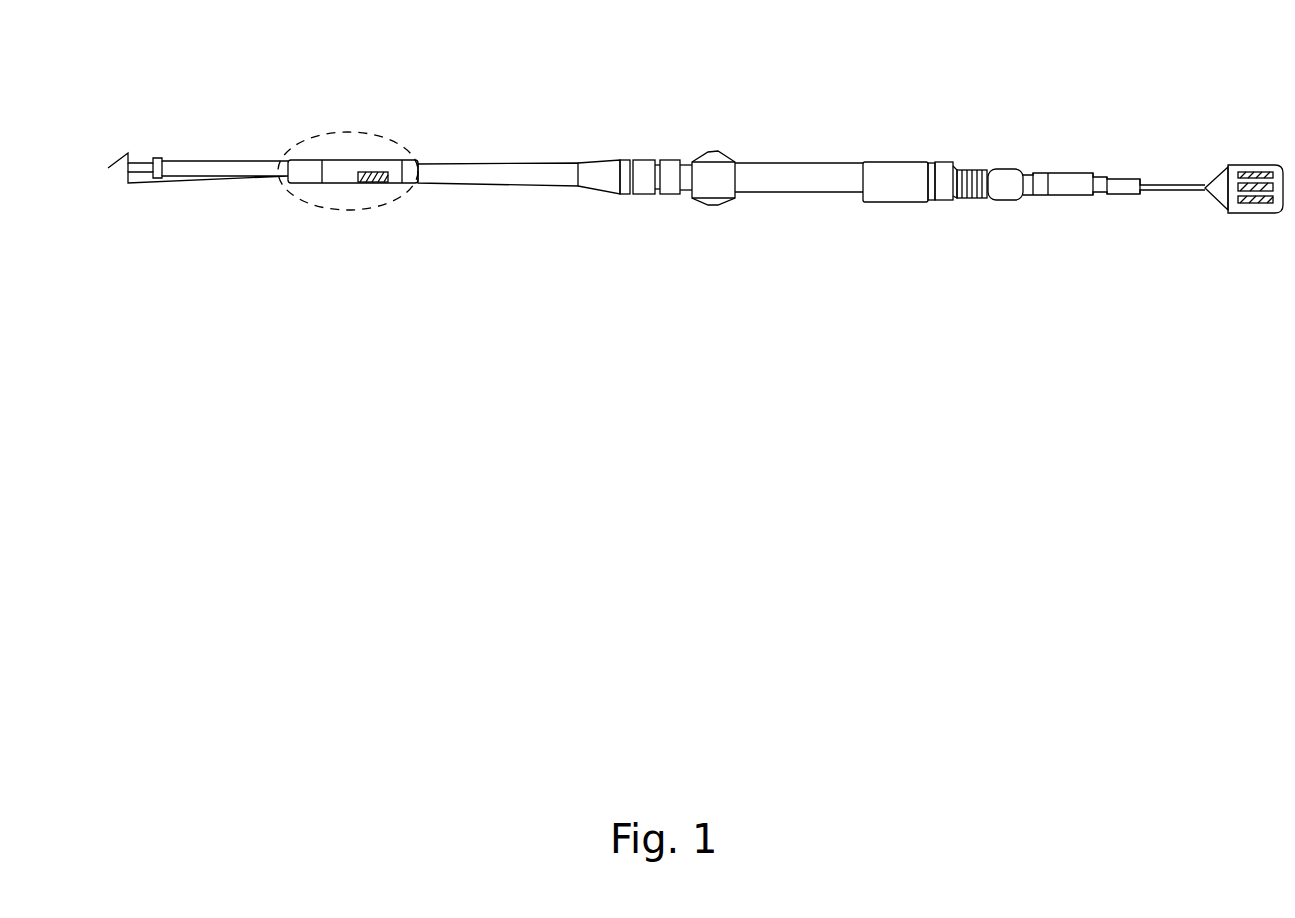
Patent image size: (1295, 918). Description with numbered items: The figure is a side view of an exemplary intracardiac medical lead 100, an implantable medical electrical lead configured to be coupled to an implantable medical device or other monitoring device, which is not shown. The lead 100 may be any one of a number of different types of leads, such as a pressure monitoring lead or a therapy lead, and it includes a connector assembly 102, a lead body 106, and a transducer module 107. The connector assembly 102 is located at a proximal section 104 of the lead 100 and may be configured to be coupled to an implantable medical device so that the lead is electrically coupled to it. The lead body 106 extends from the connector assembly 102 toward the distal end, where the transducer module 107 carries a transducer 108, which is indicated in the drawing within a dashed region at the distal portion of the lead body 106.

The intracardiac medical lead 100 is at (755, 98).
The connector assembly 102 is at (920, 148).
The proximal section 104 is at (890, 239).
The lead body 106 is at (488, 162).
The transducer module 107 is at (365, 147).
The transducer 108 is at (357, 196).